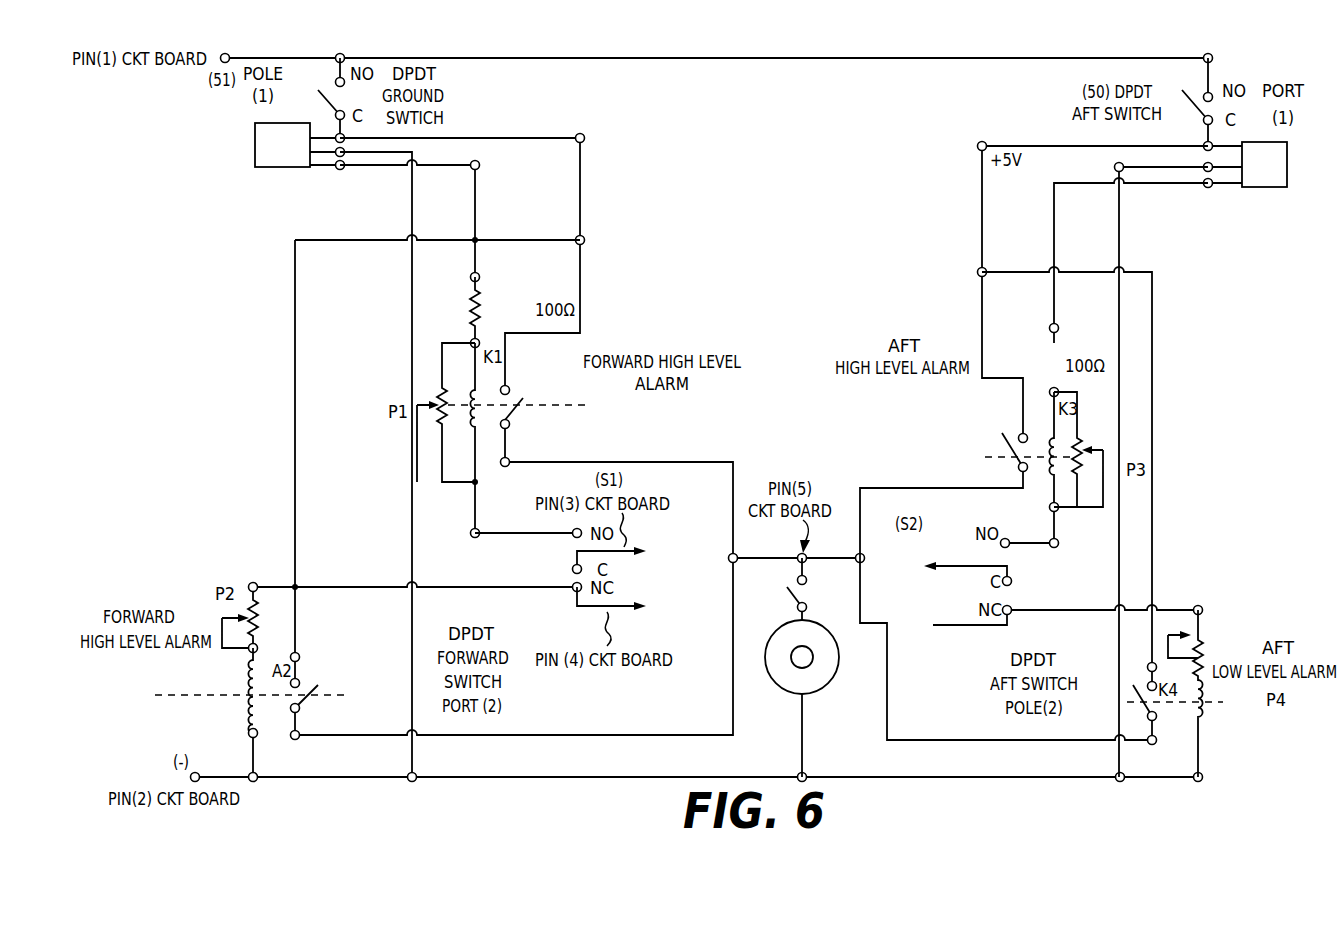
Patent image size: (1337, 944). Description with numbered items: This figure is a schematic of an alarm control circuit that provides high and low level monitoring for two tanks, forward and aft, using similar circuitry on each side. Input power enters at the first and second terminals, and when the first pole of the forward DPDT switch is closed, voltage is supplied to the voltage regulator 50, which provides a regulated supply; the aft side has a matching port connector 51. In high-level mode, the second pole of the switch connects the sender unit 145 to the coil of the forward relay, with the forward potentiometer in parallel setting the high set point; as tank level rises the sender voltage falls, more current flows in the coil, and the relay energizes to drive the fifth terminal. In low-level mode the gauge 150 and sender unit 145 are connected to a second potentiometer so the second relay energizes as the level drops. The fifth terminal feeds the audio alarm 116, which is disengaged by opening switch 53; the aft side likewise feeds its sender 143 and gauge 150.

The voltage regulator 50 is at (255, 158).
The DPDT aft switch connector (port 1) 51 is at (1267, 187).
The audio alarm switch 53 is at (812, 589).
The alarm 116 is at (805, 698).
The aft sender 143 is at (936, 560).
The sender unit 145 is at (647, 549).
The gauge 150 is at (792, 614).